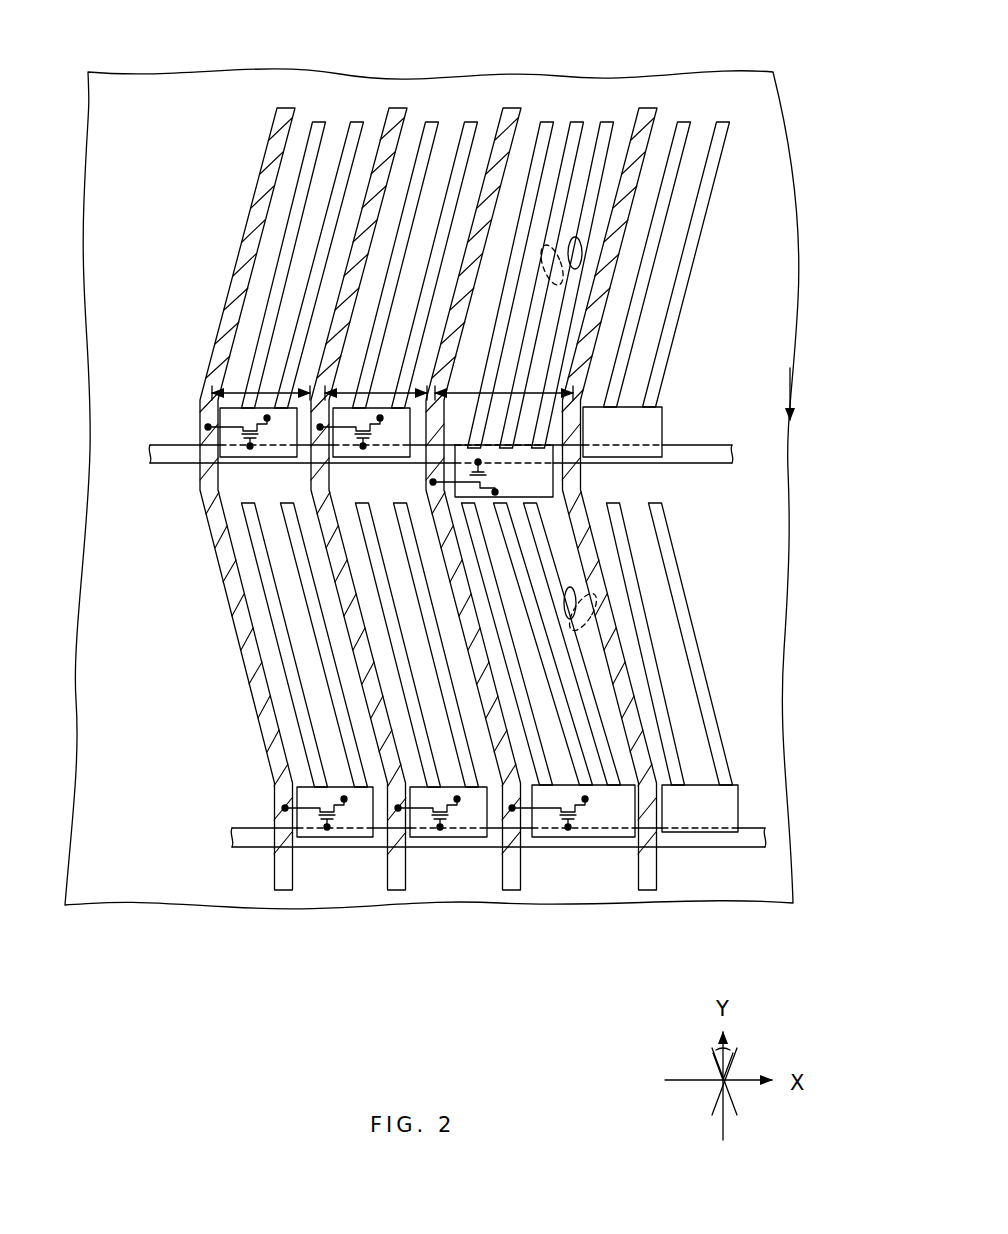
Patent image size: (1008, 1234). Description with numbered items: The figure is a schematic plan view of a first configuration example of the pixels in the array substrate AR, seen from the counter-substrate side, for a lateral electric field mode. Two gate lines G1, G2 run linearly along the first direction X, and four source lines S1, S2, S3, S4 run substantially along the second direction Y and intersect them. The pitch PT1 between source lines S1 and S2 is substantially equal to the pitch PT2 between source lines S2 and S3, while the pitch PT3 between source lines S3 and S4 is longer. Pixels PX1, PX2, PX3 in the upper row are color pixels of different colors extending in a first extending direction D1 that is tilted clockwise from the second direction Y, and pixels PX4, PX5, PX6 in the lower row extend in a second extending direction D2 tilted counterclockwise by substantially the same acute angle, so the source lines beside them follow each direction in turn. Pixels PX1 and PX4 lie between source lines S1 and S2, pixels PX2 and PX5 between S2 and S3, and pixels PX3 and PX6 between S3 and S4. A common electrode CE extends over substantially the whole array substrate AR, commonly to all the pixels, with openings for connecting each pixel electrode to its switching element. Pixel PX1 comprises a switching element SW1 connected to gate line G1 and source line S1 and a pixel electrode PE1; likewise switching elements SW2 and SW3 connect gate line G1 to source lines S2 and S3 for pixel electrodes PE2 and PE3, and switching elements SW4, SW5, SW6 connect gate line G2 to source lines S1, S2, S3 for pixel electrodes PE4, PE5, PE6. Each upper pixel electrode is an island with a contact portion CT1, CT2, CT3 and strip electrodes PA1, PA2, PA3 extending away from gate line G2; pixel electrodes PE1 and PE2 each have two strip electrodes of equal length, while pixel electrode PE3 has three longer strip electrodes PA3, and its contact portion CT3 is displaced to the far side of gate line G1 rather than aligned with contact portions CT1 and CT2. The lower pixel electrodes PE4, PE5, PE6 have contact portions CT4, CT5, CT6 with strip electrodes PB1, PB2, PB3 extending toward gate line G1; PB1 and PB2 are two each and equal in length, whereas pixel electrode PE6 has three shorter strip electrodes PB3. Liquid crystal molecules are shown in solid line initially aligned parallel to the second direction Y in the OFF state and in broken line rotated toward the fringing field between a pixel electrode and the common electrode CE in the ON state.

The array substrate AR is at (802, 138).
The source line S1 is at (291, 107).
The source line S2 is at (399, 107).
The source line S3 is at (513, 107).
The source line S4 is at (651, 107).
The gate line G1 is at (172, 443).
The gate line G2 is at (248, 828).
The pixel PX1 is at (259, 255).
The pixel PX2 is at (316, 255).
The pixel PX3 is at (602, 275).
The pixel PX4 is at (244, 754).
The pixel PX5 is at (300, 754).
The pixel PX6 is at (619, 754).
The pixel electrode PE1 is at (240, 218).
The pixel electrode PE2 is at (297, 218).
The pixel electrode PE3 is at (621, 238).
The pixel electrode PE4 is at (237, 724).
The pixel electrode PE5 is at (292, 724).
The pixel electrode PE6 is at (619, 724).
The strip electrode PA1 is at (348, 163).
The strip electrode PA2 is at (452, 203).
The strip electrode PA3 is at (585, 208).
The strip electrode PB1 is at (350, 740).
The strip electrode PB2 is at (450, 698).
The strip electrode PB3 is at (585, 735).
The contact portion CT1 is at (292, 458).
The contact portion CT2 is at (406, 458).
The contact portion CT3 is at (535, 498).
The contact portion CT4 is at (360, 838).
The contact portion CT5 is at (471, 838).
The contact portion CT6 is at (607, 838).
The switching element SW1 is at (232, 436).
The switching element SW2 is at (346, 436).
The switching element SW3 is at (473, 486).
The switching element SW4 is at (313, 824).
The switching element SW5 is at (427, 824).
The switching element SW6 is at (551, 824).
The pitch PT1 is at (266, 390).
The pitch PT2 is at (384, 390).
The pitch PT3 is at (524, 390).
The common electrode CE is at (786, 512).
The first extending direction D1 is at (733, 1062).
The second extending direction D2 is at (717, 1062).